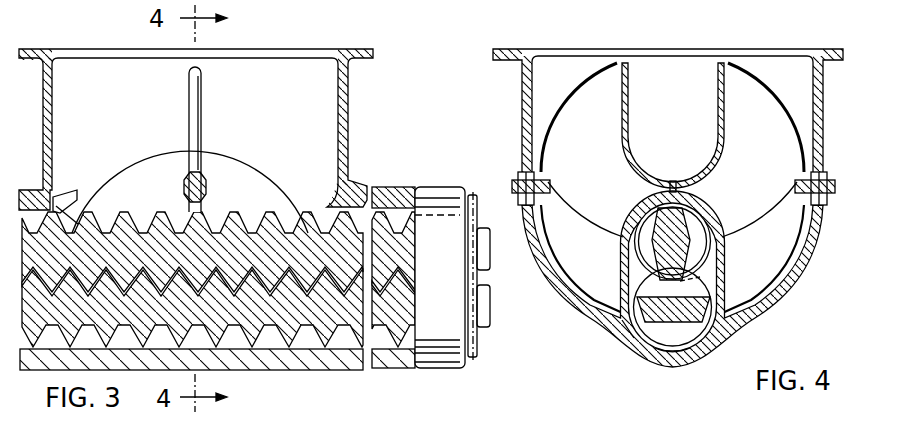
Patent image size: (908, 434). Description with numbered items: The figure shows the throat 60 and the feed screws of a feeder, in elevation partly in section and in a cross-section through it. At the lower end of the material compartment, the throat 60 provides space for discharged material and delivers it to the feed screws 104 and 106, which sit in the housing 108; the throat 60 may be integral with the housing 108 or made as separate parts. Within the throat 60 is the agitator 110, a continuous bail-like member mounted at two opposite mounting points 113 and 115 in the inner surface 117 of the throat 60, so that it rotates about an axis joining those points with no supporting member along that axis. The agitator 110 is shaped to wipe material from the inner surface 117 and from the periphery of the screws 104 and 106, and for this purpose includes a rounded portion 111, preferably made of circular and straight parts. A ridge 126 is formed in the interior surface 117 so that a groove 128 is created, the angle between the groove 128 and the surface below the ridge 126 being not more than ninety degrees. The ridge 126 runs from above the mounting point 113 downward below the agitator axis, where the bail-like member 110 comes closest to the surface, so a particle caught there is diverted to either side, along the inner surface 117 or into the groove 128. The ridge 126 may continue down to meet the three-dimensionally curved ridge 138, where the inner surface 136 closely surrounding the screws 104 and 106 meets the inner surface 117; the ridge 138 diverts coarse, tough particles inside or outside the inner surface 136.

In FIG. 3, the throat 60 is at (348, 129).
In FIG. 4, the throat 60 is at (522, 94).
In FIG. 3, the feed screw 104 is at (410, 242).
In FIG. 4, the feed screw 104 is at (716, 258).
In FIG. 3, the feed screw 106 is at (410, 308).
In FIG. 4, the feed screw 106 is at (692, 354).
In FIG. 3, the housing 108 is at (398, 187).
In FIG. 3, the agitator 110 is at (199, 101).
In FIG. 4, the agitator 110 is at (560, 118).
In FIG. 4, the rounded portion 111 is at (628, 124).
In FIG. 4, the mounting point 113 is at (522, 159).
In FIG. 4, the mounting point 115 is at (795, 186).
In FIG. 3, the inner surface 117 is at (338, 157).
In FIG. 4, the inner surface 117 is at (532, 84).
In FIG. 3, the ridge 126 is at (229, 166).
In FIG. 4, the ridge 126 is at (778, 207).
In FIG. 4, the groove 128 is at (808, 148).
In FIG. 4, the inner surface 136 is at (663, 349).
In FIG. 3, the ridge 138 is at (81, 192).
In FIG. 4, the ridge 138 is at (630, 316).